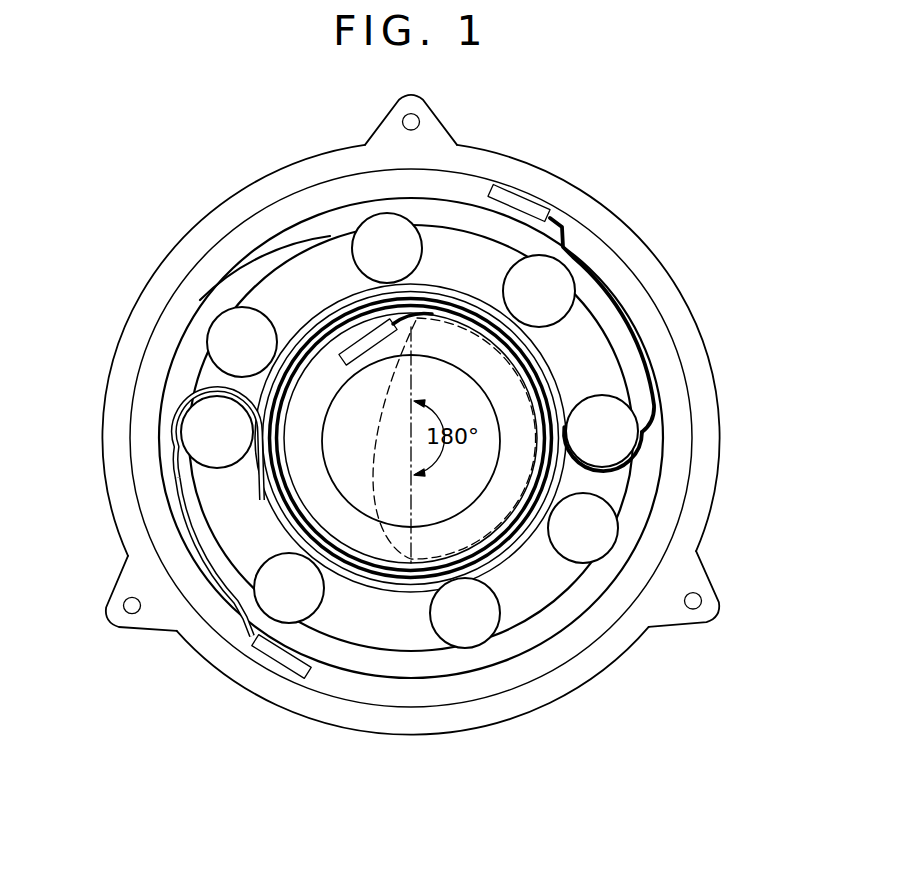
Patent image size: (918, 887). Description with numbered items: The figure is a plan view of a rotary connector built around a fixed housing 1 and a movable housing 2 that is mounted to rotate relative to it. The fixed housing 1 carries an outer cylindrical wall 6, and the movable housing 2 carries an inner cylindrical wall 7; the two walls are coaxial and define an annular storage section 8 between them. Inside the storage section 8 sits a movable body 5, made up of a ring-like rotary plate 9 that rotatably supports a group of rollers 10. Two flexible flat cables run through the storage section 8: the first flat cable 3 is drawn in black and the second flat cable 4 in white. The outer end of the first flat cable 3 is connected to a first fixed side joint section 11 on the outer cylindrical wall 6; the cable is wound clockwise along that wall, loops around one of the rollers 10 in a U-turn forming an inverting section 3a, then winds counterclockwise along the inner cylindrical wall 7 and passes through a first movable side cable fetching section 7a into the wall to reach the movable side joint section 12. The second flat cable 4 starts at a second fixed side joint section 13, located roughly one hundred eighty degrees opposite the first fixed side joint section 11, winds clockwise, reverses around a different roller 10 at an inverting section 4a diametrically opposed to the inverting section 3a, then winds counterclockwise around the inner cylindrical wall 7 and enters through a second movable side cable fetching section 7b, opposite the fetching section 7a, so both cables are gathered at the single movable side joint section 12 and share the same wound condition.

The fixed housing 1 is at (675, 285).
The movable housing 2 is at (309, 482).
The first flat cable 3 is at (614, 433).
The inverting section 3a is at (606, 479).
The second flat cable 4 is at (172, 453).
The inverting section 4a is at (222, 391).
The movable body 5 is at (540, 618).
The outer cylindrical wall 6 is at (672, 377).
The inner cylindrical wall 7 is at (305, 437).
The first movable side cable fetching section 7a is at (413, 320).
The second movable side cable fetching section 7b is at (381, 515).
The storage section 8 is at (373, 665).
The ring-like rotary plate 9 is at (266, 289).
The rollers 10 is at (208, 432).
The first fixed side joint section 11 is at (525, 197).
The movable side joint section 12 is at (370, 345).
The second fixed side joint section 13 is at (272, 668).